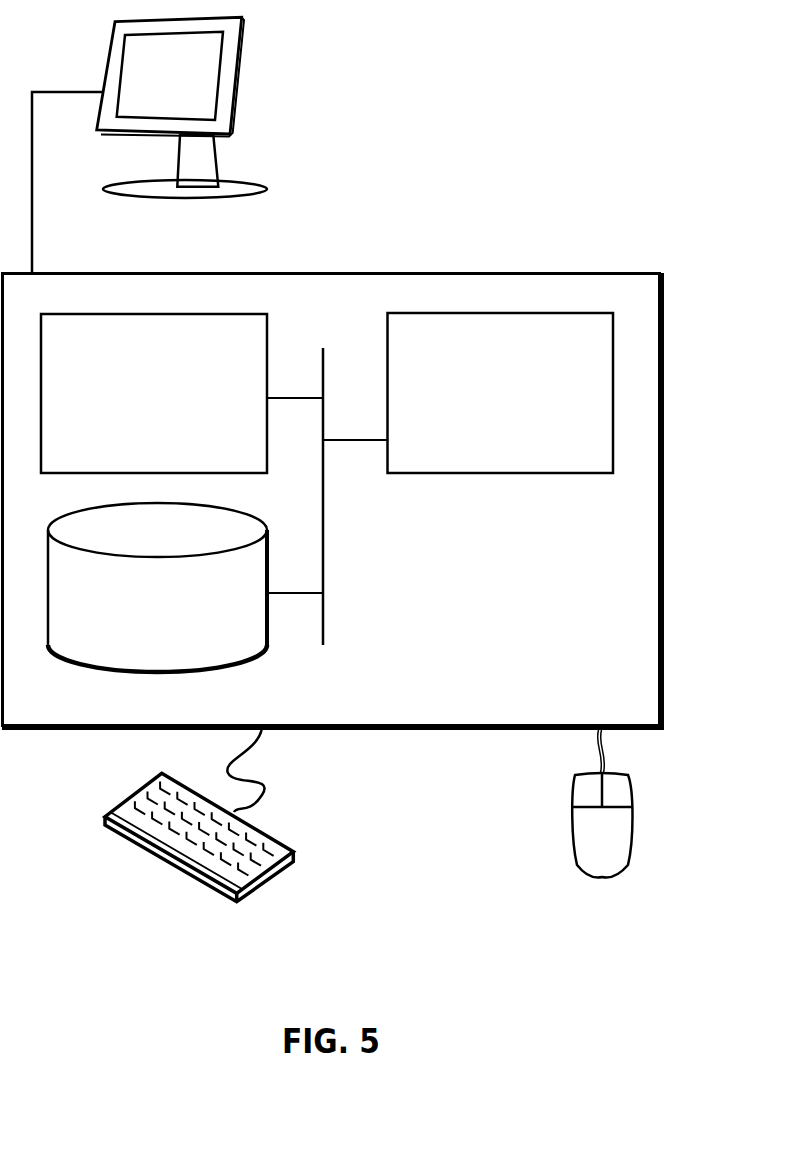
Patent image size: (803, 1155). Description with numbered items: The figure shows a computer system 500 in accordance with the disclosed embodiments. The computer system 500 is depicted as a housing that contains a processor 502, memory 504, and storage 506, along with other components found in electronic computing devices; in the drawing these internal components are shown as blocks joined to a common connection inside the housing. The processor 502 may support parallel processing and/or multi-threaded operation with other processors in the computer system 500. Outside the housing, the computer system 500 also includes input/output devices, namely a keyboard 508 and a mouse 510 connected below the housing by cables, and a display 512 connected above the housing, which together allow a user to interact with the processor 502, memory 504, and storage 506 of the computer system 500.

The computer system 500 is at (378, 250).
The processor 502 is at (483, 406).
The memory 504 is at (134, 406).
The storage 506 is at (140, 616).
The keyboard 508 is at (125, 837).
The mouse 510 is at (581, 847).
The display 512 is at (149, 145).